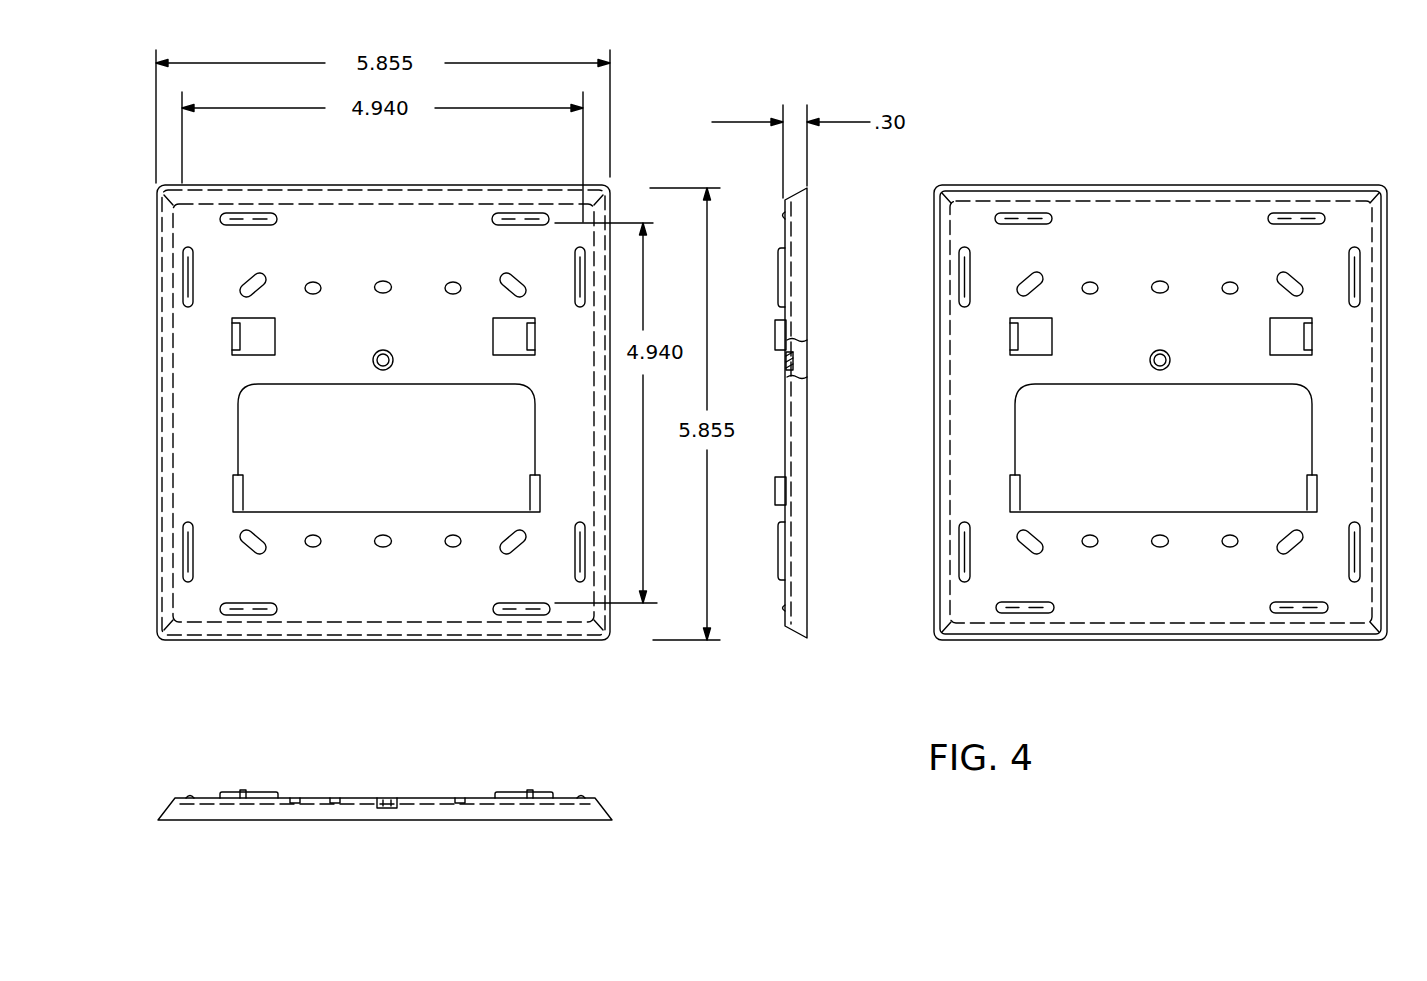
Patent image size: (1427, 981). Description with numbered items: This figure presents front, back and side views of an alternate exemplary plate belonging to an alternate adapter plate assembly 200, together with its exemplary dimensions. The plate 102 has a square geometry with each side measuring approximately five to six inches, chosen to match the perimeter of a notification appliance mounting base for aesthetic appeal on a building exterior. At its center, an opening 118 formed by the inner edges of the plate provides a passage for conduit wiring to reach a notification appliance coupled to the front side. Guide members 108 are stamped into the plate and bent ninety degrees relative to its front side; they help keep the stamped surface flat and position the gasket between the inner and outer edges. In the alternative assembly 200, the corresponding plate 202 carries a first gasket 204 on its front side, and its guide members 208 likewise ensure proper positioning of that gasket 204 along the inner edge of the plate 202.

The plate 102 is at (612, 200).
The guide members 108 is at (240, 340).
The opening 118 is at (371, 470).
The adapter plate assembly 200 is at (1249, 105).
The plate 202 is at (447, 296).
The first gasket 204 is at (246, 278).
The guide members 208 is at (252, 212).